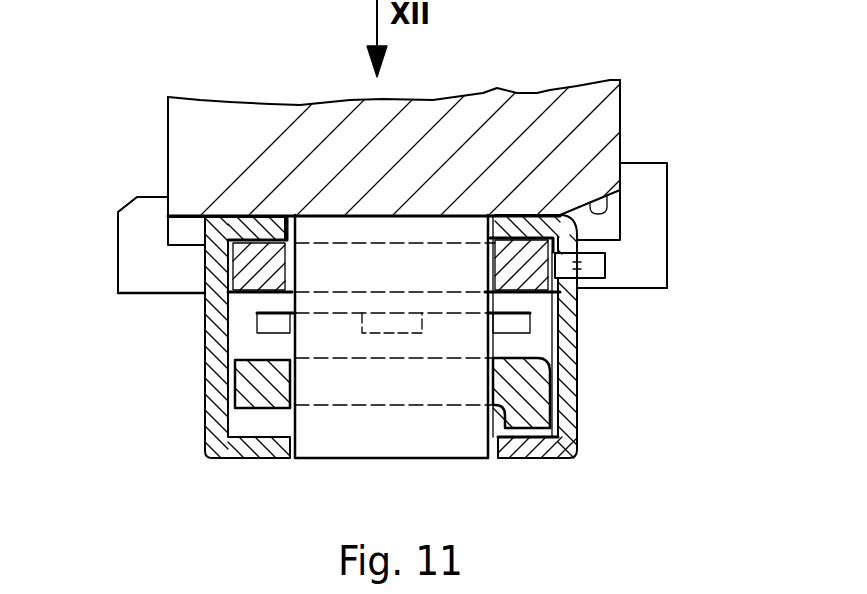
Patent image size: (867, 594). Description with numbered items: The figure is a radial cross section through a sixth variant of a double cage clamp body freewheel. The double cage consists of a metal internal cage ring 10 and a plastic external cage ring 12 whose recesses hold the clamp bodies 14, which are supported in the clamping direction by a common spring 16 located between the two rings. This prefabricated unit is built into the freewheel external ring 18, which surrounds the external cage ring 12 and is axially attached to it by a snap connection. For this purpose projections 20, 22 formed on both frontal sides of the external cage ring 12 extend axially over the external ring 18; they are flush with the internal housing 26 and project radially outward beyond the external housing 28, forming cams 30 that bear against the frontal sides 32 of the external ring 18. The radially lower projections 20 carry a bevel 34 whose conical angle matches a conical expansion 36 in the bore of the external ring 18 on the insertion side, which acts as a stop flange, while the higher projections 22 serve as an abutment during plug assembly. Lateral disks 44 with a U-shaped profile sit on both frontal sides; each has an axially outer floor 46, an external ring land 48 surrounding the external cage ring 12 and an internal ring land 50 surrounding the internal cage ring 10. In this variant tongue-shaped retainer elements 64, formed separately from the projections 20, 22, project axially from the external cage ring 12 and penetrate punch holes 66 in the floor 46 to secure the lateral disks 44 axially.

The internal cage ring 10 is at (262, 385).
The external cage ring 12 is at (203, 332).
The clamp bodies 14 is at (468, 440).
The spring 16 is at (268, 326).
The freewheel external ring 18 is at (338, 130).
The projections 20 is at (152, 282).
The projections 22 is at (650, 277).
The internal housing 26 is at (578, 352).
The external housing 28 is at (250, 240).
The cams 30 is at (133, 225).
The frontal sides 32 is at (166, 137).
The bevel 34 is at (130, 197).
The conical expansion 36 is at (583, 197).
The lateral disks 44 is at (208, 455).
The floor 46 is at (222, 418).
The external ring land 48 is at (275, 227).
The internal ring land 50 is at (272, 457).
The retainer elements 64 is at (607, 263).
The punch holes 66 is at (578, 293).